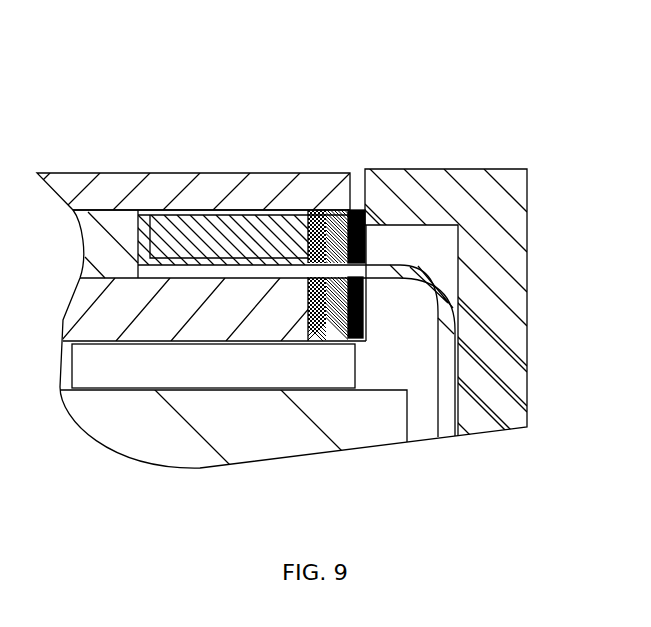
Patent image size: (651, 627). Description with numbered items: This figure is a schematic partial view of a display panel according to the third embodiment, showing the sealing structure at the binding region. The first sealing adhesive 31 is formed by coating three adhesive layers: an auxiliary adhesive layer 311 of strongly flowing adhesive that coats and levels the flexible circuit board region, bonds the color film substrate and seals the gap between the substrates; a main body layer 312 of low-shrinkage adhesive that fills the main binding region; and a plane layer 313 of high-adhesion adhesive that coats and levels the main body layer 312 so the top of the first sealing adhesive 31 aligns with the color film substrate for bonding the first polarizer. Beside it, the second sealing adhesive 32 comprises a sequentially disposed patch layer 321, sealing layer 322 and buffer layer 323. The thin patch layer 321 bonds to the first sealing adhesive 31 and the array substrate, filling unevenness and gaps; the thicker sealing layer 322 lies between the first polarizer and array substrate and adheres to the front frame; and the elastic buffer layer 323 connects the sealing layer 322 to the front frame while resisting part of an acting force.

The first sealing adhesive 31 is at (237, 60).
The auxiliary adhesive layer 311 is at (147, 247).
The main body layer 312 is at (203, 233).
The plane layer 313 is at (252, 210).
The second sealing adhesive 32 is at (542, 47).
The patch layer 321 is at (318, 212).
The sealing layer 322 is at (340, 210).
The buffer layer 323 is at (365, 232).